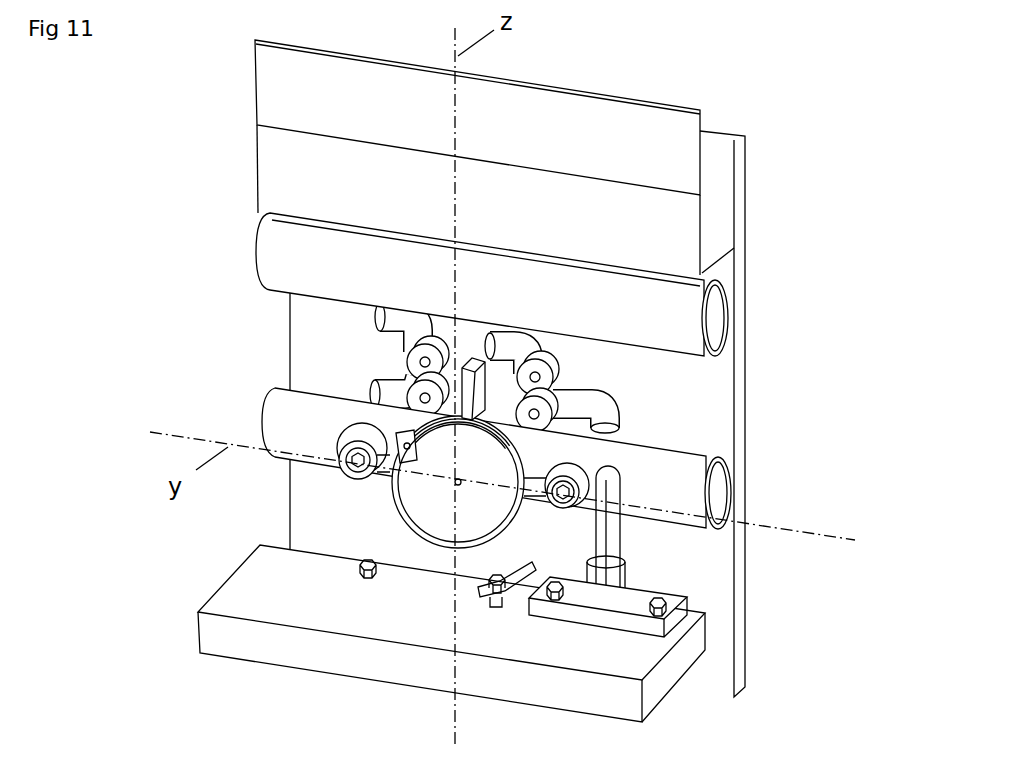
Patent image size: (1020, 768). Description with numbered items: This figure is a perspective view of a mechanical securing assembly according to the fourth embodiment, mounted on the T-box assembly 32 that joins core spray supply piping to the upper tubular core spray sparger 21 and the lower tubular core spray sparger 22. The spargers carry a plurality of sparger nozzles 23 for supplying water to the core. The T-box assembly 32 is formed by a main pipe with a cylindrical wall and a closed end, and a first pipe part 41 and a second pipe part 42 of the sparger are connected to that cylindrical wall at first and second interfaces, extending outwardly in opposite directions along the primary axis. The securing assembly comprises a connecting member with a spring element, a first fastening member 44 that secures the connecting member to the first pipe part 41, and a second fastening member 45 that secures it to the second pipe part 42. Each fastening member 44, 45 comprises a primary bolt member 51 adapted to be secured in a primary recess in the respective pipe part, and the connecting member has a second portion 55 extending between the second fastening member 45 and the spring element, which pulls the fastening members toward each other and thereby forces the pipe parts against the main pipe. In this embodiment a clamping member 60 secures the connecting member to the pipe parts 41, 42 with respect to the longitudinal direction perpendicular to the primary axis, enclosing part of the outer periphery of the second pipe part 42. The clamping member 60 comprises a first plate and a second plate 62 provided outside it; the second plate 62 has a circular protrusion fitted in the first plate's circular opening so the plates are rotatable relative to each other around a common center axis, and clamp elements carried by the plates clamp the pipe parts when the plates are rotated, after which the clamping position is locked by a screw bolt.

The upper tubular core spray sparger 21 is at (307, 242).
The lower tubular core spray sparger 22 is at (343, 400).
The sparger nozzles 23 is at (425, 337).
The T-box assembly 32 is at (492, 388).
The first pipe part 41 is at (332, 420).
The second pipe part 42 is at (600, 447).
The first fastening member 44 is at (338, 440).
The second fastening member 45 is at (580, 470).
The primary bolt member 51 is at (355, 460).
The second portion 55 is at (535, 483).
The clamping member 60 is at (388, 493).
The second plate 62 is at (423, 510).